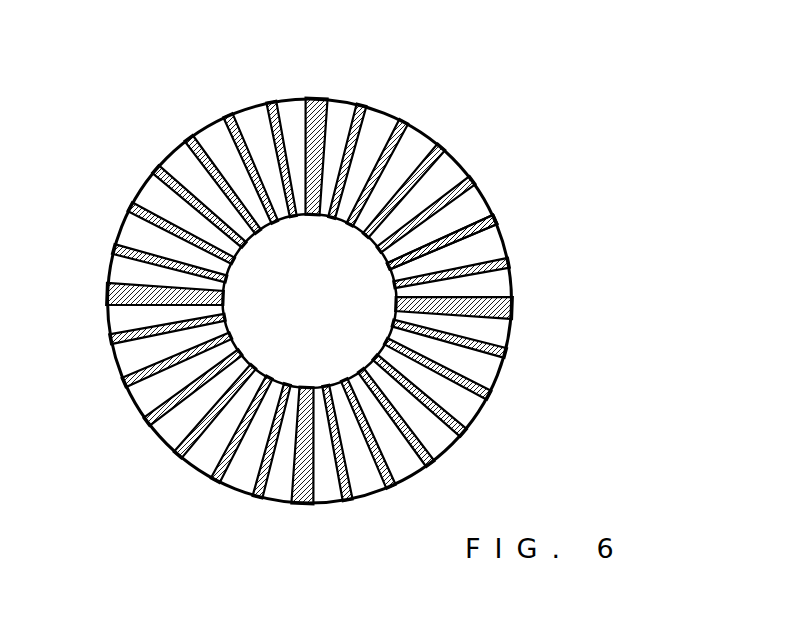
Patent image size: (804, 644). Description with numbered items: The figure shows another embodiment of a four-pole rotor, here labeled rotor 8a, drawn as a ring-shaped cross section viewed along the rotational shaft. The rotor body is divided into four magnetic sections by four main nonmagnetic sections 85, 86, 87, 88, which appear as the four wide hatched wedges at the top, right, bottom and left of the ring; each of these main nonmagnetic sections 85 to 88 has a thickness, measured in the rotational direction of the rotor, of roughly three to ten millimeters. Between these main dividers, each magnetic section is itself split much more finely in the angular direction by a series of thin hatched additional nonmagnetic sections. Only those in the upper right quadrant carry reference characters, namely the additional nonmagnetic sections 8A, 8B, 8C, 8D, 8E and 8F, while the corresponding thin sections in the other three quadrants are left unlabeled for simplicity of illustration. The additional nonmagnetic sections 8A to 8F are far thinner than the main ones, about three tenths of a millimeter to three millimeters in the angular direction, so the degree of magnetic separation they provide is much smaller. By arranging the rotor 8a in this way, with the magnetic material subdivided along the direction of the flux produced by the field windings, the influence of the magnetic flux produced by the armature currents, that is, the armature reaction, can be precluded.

The rotor 8a is at (126, 158).
The main nonmagnetic section 85 is at (315, 127).
The main nonmagnetic section 86 is at (490, 306).
The main nonmagnetic section 87 is at (307, 490).
The main nonmagnetic section 88 is at (127, 293).
The additional nonmagnetic section 8A is at (353, 128).
The additional nonmagnetic section 8B is at (400, 130).
The additional nonmagnetic section 8C is at (440, 149).
The additional nonmagnetic section 8D is at (470, 181).
The additional nonmagnetic section 8E is at (493, 220).
The additional nonmagnetic section 8F is at (504, 261).